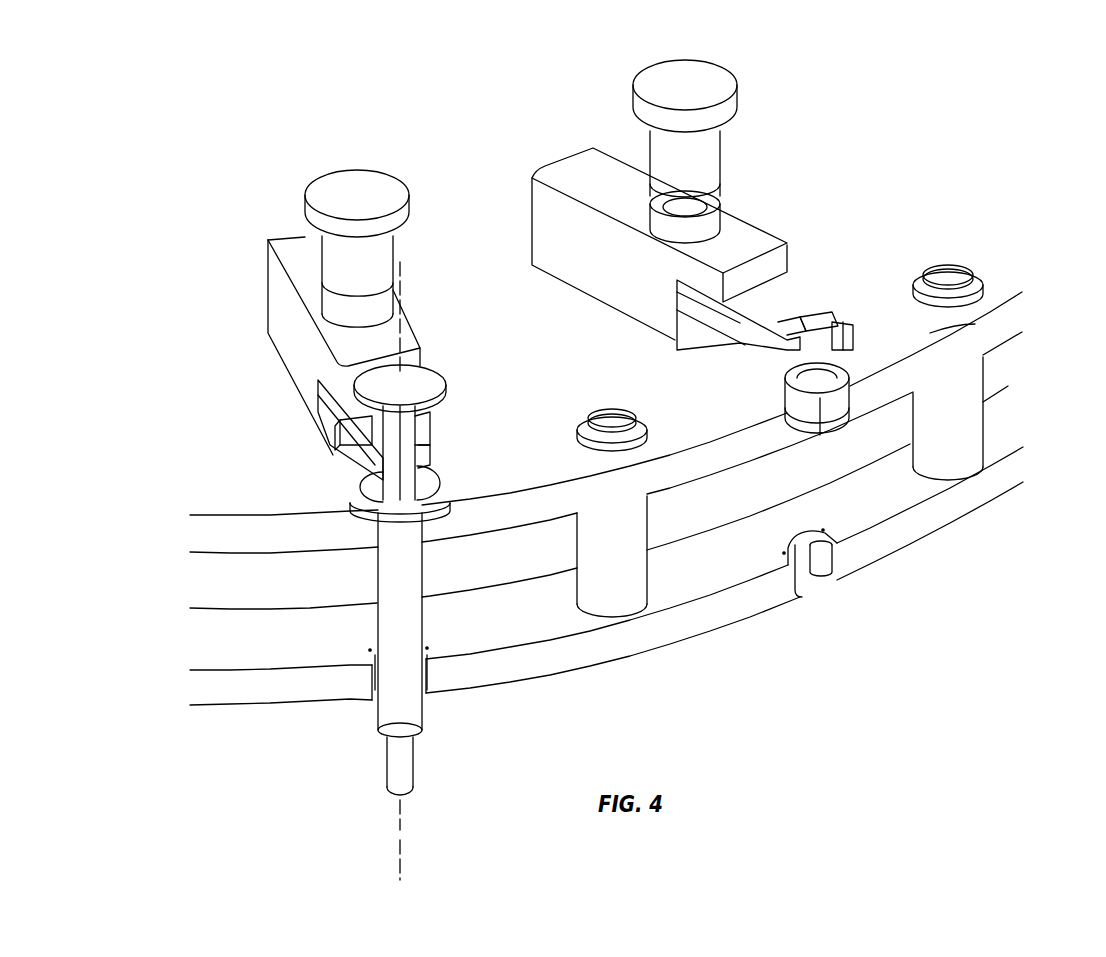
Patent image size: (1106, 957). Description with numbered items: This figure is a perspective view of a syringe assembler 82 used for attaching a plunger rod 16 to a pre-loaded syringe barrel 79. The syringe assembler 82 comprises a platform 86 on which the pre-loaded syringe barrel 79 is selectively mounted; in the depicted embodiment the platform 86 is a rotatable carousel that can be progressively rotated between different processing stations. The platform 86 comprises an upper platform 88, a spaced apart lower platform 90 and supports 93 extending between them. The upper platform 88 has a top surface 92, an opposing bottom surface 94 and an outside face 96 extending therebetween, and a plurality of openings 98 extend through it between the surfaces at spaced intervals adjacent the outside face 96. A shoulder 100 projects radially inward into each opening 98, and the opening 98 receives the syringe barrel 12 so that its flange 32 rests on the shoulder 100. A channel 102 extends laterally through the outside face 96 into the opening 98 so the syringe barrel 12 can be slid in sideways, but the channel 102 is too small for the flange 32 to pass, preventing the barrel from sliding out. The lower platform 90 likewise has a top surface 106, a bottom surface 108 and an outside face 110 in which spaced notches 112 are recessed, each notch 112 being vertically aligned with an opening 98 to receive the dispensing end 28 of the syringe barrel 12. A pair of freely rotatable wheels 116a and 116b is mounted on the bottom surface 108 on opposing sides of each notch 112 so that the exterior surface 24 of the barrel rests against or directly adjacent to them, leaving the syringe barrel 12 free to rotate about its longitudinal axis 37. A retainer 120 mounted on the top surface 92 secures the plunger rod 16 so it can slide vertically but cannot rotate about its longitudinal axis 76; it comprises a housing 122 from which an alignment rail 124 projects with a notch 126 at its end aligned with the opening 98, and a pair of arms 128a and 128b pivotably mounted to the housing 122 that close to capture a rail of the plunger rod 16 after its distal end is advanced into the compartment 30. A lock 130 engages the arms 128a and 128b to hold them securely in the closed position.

The syringe barrel 12 is at (416, 568).
The plunger rod 16 is at (433, 497).
The exterior surface 24 is at (423, 615).
The dispensing end 28 is at (386, 713).
The compartment 30 is at (368, 489).
The flange 32 is at (440, 510).
The longitudinal axis 37 is at (400, 830).
The longitudinal axis 76 is at (405, 283).
The pre-loaded syringe barrel 79 is at (398, 627).
The syringe assembler 82 is at (877, 128).
The platform 86 is at (975, 324).
The upper platform 88 is at (975, 335).
The lower platform 90 is at (960, 493).
The top surface 92 is at (697, 433).
The supports 93 is at (973, 377).
The bottom surface 94 is at (728, 466).
The outside face 96 is at (707, 464).
The openings 98 is at (433, 522).
The shoulder 100 is at (960, 402).
The channel 102 is at (850, 428).
The top surface 106 is at (925, 512).
The bottom surface 108 is at (710, 640).
The outside face 110 is at (990, 470).
The notches 112 is at (800, 528).
The wheel 116a is at (840, 568).
The wheel 116b is at (800, 592).
The retainer 120 is at (750, 233).
The housing 122 is at (590, 160).
The alignment rail 124 is at (350, 392).
The notch 126 is at (368, 421).
The arm 128a is at (848, 332).
The arm 128b is at (767, 382).
The lock 130 is at (715, 148).